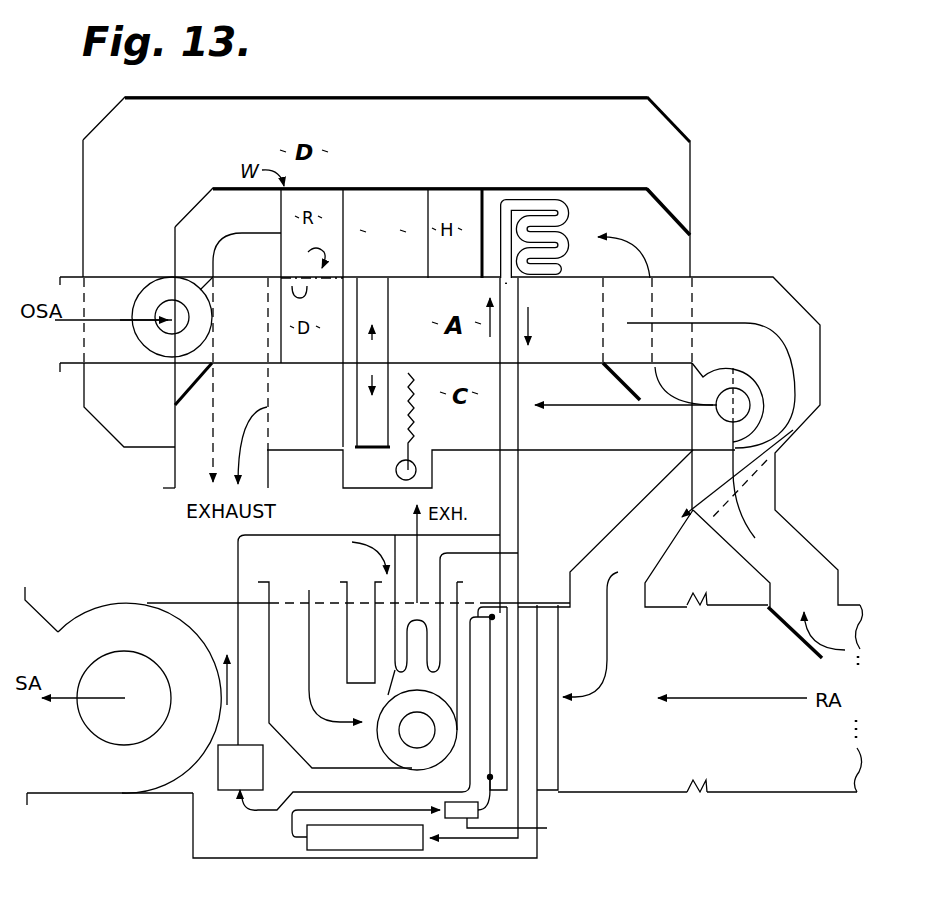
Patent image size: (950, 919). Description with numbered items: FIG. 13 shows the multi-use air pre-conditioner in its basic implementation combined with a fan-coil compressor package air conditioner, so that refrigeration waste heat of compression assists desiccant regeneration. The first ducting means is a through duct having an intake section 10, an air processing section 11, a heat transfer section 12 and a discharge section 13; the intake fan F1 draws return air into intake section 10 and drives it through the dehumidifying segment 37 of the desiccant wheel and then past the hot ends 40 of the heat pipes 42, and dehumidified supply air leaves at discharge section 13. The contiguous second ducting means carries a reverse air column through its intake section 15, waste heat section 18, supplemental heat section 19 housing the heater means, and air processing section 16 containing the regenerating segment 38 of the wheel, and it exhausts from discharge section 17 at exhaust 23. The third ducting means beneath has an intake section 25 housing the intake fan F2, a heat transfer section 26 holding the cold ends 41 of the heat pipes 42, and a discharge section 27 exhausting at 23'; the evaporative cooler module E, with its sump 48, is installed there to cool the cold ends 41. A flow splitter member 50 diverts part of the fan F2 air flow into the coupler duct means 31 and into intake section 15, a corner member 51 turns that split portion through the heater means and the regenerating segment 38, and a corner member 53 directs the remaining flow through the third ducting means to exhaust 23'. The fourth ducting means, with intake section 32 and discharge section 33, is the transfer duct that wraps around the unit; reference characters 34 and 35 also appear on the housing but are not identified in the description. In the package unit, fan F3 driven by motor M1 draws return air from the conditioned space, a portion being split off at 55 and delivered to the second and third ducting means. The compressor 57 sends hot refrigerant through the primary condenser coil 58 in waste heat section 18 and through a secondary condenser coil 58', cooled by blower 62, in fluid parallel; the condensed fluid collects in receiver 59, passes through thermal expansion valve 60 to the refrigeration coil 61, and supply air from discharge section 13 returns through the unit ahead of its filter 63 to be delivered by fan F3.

The intake section 10 is at (120, 372).
The air processing section 11 is at (322, 350).
The heat transfer section 12 is at (388, 293).
The discharge section 13 is at (790, 306).
The intake section 15 is at (662, 250).
The air processing section 16 is at (318, 212).
The discharge section 17 is at (207, 214).
The waste heat section 18 is at (588, 200).
The supplemental heat section 19 is at (455, 196).
The exhaust 23 is at (142, 476).
The exhaust 23' is at (297, 473).
The intake section 25 is at (690, 441).
The heat transfer section 26 is at (352, 383).
The discharge section 27 is at (192, 425).
The coupler duct means 31 is at (692, 296).
The intake section 32 is at (130, 410).
The discharge section 33 is at (658, 132).
The side wall 34 is at (118, 210).
The top wall 35 is at (430, 118).
The dehumidifying segment 37 is at (283, 305).
The regenerating segment 38 is at (327, 252).
The hot end 40 is at (374, 348).
The cold end 41 is at (362, 407).
The heat pipes 42 is at (352, 402).
The sump 48 is at (352, 490).
The flow splitter member 50 is at (615, 393).
The corner member 51 is at (665, 211).
The corner member 53 is at (168, 400).
The split-off point 55 is at (790, 628).
The compressor 57 is at (225, 778).
The primary condenser coil 58 is at (531, 223).
The secondary condenser coil 58' is at (453, 622).
The receiver 59 is at (352, 850).
The thermal expansion valve 60 is at (515, 808).
The refrigeration coil 61 is at (522, 728).
The blower 62 is at (385, 737).
The filter 63 is at (548, 762).
The evaporative cooler module E is at (418, 428).
The intake fan F1 is at (172, 274).
The intake fan F2 is at (698, 423).
The fan F3 is at (130, 600).
The motor M1 is at (148, 698).